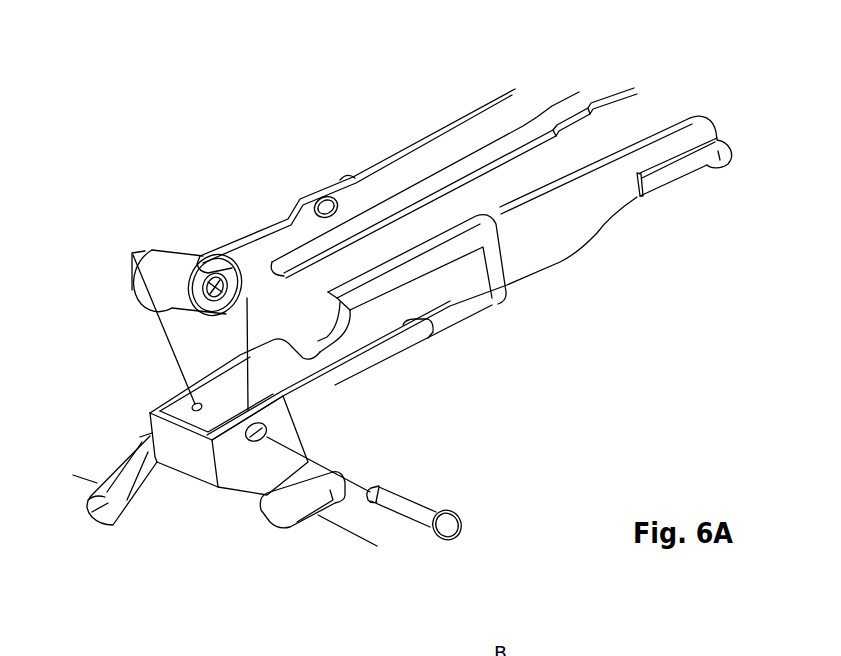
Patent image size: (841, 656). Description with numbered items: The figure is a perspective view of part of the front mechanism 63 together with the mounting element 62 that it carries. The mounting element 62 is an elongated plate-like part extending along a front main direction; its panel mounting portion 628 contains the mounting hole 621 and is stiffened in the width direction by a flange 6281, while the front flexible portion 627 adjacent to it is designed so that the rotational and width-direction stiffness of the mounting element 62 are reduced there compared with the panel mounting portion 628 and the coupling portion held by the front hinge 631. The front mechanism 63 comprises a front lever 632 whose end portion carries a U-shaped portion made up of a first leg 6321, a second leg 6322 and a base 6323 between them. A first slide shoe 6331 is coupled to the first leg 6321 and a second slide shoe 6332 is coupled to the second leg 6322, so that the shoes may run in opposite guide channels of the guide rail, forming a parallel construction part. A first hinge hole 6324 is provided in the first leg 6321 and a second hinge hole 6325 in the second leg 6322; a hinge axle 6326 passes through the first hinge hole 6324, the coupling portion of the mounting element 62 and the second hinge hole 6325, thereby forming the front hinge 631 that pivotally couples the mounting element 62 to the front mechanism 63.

The mounting element 62 is at (549, 87).
The panel mounting portion 628 is at (413, 172).
The flange 6281 is at (288, 266).
The mounting hole 621 is at (321, 204).
The front flexible portion 627 is at (252, 258).
The front hinge 631 is at (207, 255).
The front lever 632 is at (557, 246).
The front mechanism 63 is at (613, 264).
The second leg 6322 is at (175, 410).
The first leg 6321 is at (262, 468).
The second hinge hole 6325 is at (187, 398).
The first hinge hole 6324 is at (268, 436).
The hinge axle 6326 is at (420, 510).
The first slide shoe 6331 is at (287, 503).
The base 6323 is at (160, 493).
The second slide shoe 6332 is at (97, 498).